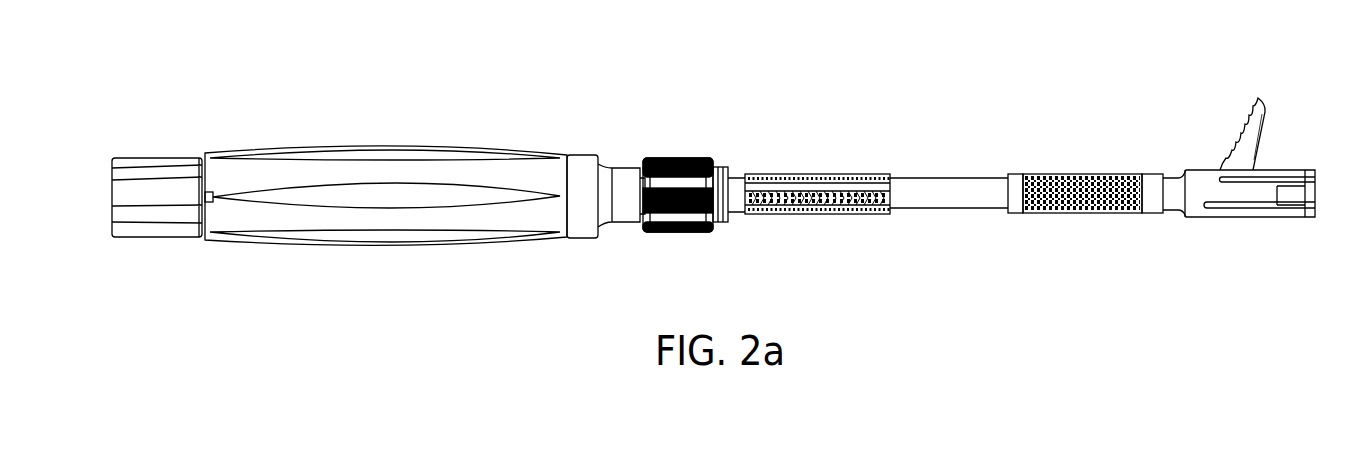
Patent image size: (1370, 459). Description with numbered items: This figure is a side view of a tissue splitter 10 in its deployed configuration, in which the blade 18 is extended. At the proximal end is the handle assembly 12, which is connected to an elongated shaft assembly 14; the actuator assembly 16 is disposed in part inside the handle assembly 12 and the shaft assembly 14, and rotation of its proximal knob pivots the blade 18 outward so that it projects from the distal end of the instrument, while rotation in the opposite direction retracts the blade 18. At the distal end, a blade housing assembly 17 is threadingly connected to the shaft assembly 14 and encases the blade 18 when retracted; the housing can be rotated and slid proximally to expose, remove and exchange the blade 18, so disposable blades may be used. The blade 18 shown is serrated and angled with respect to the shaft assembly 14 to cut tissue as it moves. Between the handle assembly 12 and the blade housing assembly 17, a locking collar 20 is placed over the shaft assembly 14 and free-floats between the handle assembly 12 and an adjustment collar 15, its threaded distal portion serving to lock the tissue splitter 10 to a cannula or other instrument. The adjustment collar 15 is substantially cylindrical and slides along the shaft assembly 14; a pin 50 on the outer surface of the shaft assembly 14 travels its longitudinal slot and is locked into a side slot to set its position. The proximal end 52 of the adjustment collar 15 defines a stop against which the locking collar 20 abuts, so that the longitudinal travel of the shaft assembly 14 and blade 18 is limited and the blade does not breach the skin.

The tissue splitter 10 is at (845, 34).
The handle assembly 12 is at (442, 146).
The shaft assembly 14 is at (957, 175).
The adjustment collar 15 is at (830, 173).
The actuator assembly 16 is at (150, 155).
The blade housing assembly 17 is at (1182, 175).
The blade 18 is at (1268, 127).
The locking collar 20 is at (680, 155).
The pin 50 is at (878, 208).
The proximal end of the adjustment collar 52 is at (742, 203).